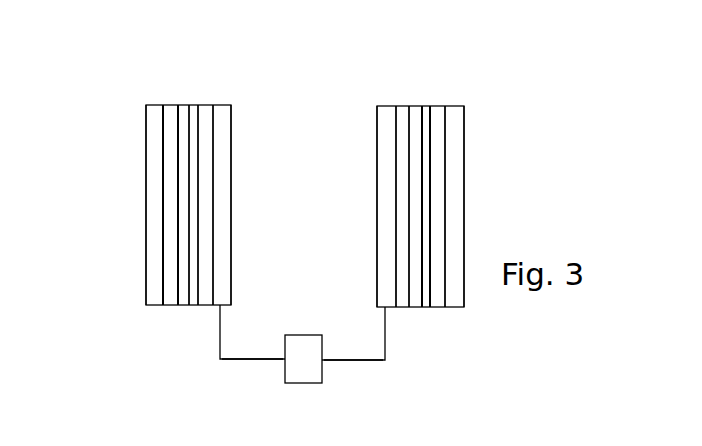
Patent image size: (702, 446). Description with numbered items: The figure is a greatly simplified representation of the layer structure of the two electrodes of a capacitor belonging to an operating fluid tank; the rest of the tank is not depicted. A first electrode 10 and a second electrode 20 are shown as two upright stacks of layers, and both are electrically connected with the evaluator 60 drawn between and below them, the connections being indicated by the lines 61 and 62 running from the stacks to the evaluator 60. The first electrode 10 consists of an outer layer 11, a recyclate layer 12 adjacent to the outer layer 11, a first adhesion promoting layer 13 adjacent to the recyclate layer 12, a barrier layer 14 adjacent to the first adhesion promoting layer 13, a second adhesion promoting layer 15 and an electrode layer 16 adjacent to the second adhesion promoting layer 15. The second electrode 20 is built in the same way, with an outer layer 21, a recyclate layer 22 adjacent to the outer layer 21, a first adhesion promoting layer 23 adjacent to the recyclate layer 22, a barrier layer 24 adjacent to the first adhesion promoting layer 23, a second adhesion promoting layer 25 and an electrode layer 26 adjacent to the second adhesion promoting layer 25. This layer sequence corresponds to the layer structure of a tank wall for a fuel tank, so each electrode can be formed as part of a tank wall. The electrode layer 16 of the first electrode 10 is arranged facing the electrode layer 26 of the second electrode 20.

The first electrode 10 is at (153, 199).
The outer layer 11 is at (158, 104).
The recyclate layer 12 is at (177, 104).
The first adhesion promoting layer 13 is at (184, 104).
The barrier layer 14 is at (193, 307).
The second adhesion promoting layer 15 is at (209, 104).
The electrode layer 16 is at (223, 104).
The second electrode 20 is at (454, 197).
The outer layer 21 is at (460, 105).
The recyclate layer 22 is at (442, 105).
The first adhesion promoting layer 23 is at (423, 105).
The barrier layer 24 is at (417, 308).
The second adhesion promoting layer 25 is at (403, 105).
The electrode layer 26 is at (382, 105).
The evaluator 60 is at (320, 373).
The first connection line 61 is at (238, 362).
The second connection line 62 is at (375, 365).